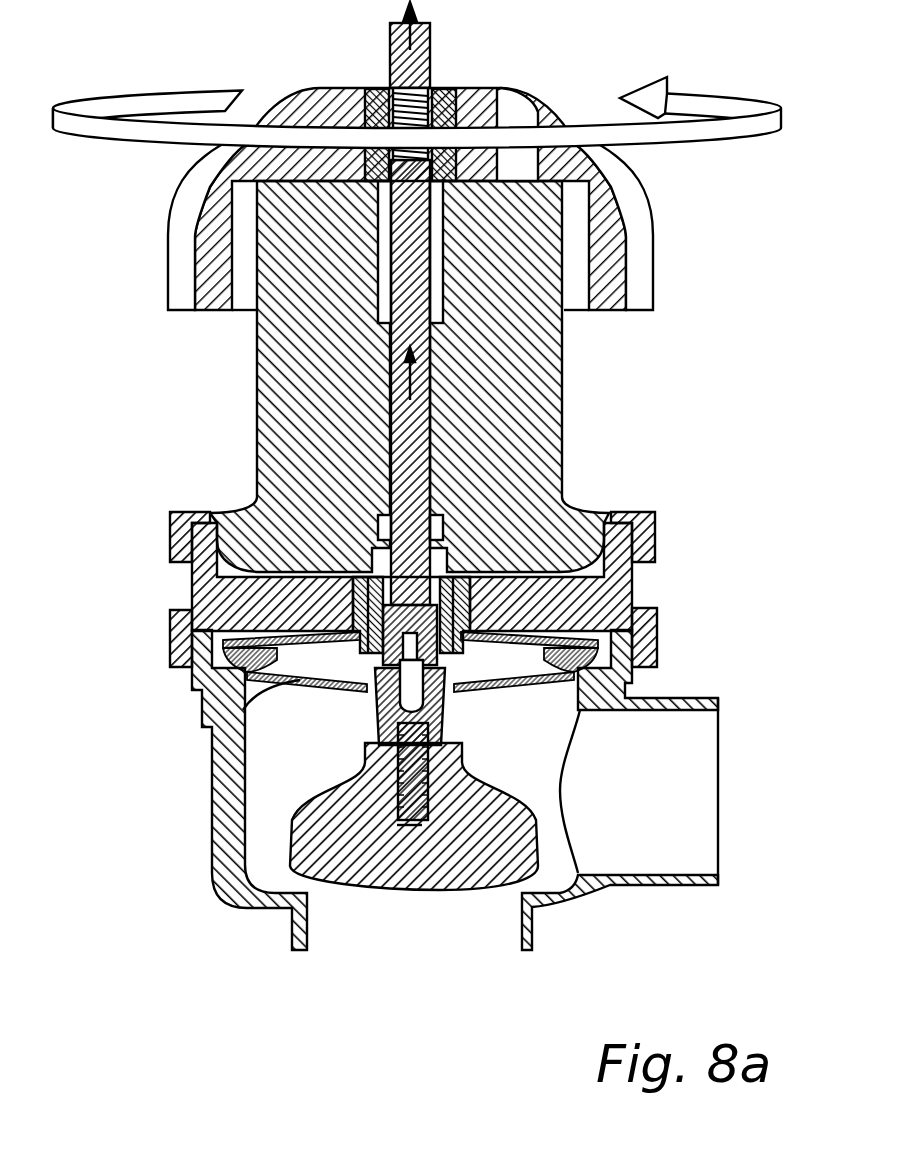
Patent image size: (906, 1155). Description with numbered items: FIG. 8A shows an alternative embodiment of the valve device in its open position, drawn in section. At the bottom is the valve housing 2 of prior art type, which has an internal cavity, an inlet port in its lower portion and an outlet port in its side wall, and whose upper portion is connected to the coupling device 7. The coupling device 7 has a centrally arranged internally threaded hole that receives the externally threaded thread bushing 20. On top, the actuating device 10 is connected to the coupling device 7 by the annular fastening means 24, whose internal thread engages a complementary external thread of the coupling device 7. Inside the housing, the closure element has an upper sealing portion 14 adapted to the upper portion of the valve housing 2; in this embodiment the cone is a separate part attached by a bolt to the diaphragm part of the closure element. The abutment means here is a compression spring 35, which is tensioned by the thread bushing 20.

The valve housing 2 is at (186, 825).
The coupling device 7 is at (178, 596).
The actuating device 10 is at (680, 279).
The sealing portion 14 is at (203, 700).
The thread bushing 20 is at (472, 592).
The fastening means 24 is at (655, 523).
The compression spring 35 is at (657, 637).